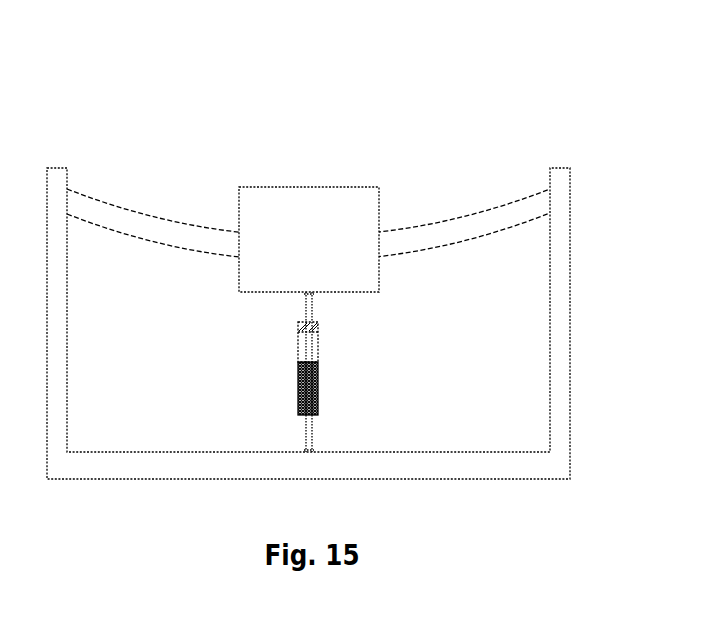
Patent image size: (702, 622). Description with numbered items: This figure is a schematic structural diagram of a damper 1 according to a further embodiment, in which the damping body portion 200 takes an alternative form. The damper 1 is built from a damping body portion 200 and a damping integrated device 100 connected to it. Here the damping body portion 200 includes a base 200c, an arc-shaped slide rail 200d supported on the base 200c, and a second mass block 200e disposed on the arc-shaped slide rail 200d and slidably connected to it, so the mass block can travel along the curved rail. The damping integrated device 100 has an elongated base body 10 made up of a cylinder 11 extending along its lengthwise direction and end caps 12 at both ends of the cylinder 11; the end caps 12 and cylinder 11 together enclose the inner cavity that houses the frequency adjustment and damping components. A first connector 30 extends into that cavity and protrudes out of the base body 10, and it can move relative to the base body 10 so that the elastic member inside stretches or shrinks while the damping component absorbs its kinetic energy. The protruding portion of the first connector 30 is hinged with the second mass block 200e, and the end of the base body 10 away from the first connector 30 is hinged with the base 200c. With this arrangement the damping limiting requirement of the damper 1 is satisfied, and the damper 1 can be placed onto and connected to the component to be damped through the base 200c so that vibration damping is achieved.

The damper 1 is at (272, 31).
The damping body portion 200 is at (312, 177).
The base 200c is at (557, 278).
The arc-shaped slide rail 200d is at (457, 232).
The second mass block 200e is at (316, 200).
The damping integrated device 100 is at (313, 372).
The first connector 30 is at (313, 310).
The base body 10 is at (263, 368).
The cylinder 11 is at (298, 323).
The end caps 12 is at (283, 385).